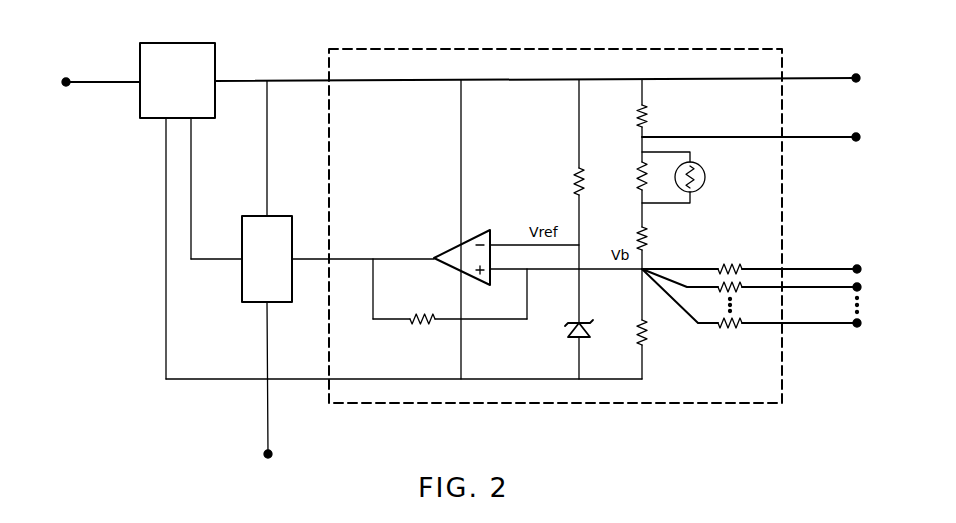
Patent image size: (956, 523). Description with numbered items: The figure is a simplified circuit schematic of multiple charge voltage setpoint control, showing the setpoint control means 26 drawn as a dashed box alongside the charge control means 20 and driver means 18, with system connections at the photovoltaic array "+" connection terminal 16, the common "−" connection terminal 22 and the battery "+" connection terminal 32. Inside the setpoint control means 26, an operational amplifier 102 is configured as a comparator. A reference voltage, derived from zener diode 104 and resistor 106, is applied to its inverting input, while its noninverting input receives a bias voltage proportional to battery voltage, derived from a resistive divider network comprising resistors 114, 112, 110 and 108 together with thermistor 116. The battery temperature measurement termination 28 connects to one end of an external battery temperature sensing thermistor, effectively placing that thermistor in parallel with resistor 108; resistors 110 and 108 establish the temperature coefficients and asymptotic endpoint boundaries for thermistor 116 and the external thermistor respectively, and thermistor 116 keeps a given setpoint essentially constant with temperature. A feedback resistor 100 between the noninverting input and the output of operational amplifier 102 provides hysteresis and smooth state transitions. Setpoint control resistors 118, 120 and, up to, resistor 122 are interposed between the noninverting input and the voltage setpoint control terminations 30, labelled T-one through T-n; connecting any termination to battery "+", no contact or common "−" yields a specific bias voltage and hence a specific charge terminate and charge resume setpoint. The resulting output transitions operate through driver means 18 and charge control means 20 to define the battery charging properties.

The photovoltaic array "+" connection terminal 16 is at (65, 73).
The driver means 18 is at (237, 309).
The charge control means 20 is at (218, 52).
The common "−" connection terminal 22 is at (259, 451).
The setpoint control means 26 is at (519, 44).
The battery temperature measurement termination 28 is at (862, 130).
The voltage setpoint control terminations 30 is at (858, 260).
The battery "+" connection terminal 32 is at (862, 67).
The feedback resistor 100 is at (419, 328).
The operational amplifier 102 is at (442, 250).
The zener diode 104 is at (569, 344).
The resistor 106 is at (574, 168).
The resistor 108 is at (636, 106).
The resistor 110 is at (636, 166).
The resistor 112 is at (637, 227).
The resistor 114 is at (648, 340).
The thermistor 116 is at (710, 172).
The setpoint control resistor 118 is at (734, 262).
The setpoint control resistor 120 is at (736, 293).
The setpoint control resistor 122 is at (736, 331).